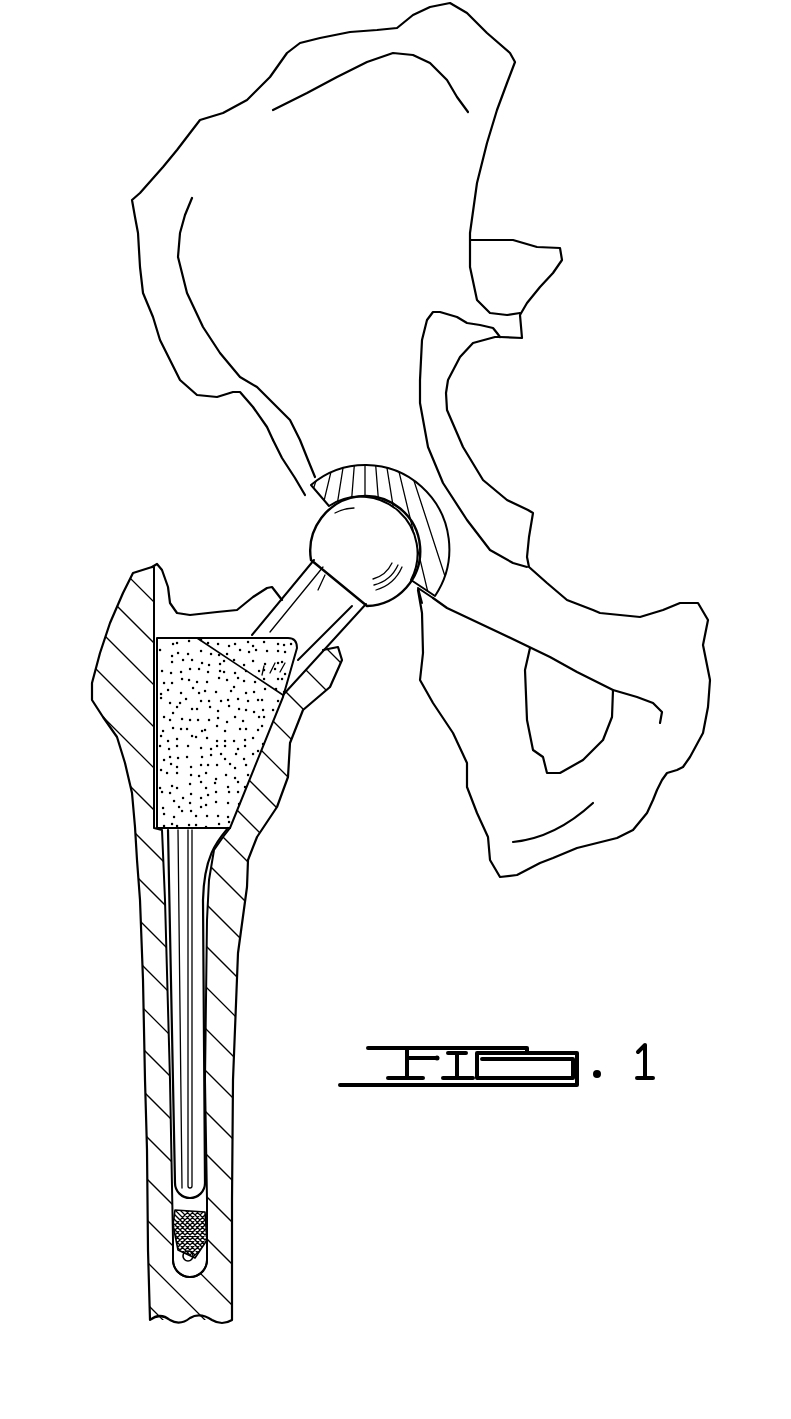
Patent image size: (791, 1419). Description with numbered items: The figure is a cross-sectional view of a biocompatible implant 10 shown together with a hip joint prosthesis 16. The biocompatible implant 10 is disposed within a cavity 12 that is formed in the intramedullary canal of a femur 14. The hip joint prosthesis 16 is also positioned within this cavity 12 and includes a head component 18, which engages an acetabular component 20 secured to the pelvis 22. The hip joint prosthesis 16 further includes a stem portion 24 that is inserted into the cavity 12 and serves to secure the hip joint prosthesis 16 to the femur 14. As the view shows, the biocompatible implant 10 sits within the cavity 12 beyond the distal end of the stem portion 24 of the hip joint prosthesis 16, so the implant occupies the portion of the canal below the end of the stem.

The biocompatible implant 10 is at (170, 1238).
The cavity 12 is at (185, 1262).
The femur 14 is at (143, 1053).
The hip joint prosthesis 16 is at (192, 548).
The head component 18 is at (312, 540).
The acetabular component 20 is at (318, 498).
The pelvis 22 is at (160, 338).
The stem portion 24 is at (172, 892).